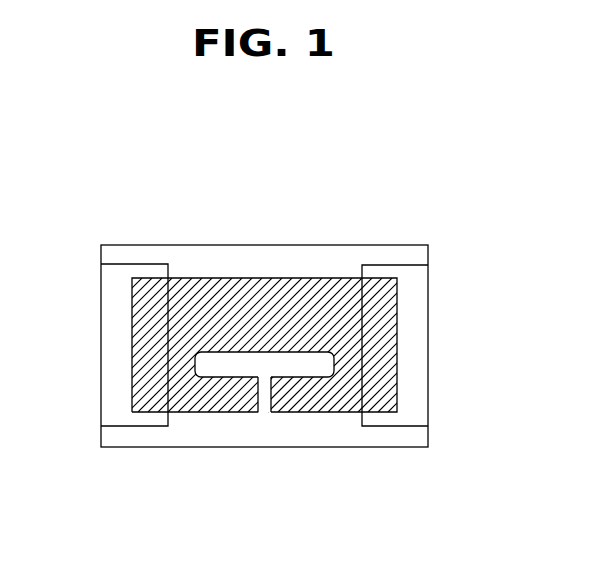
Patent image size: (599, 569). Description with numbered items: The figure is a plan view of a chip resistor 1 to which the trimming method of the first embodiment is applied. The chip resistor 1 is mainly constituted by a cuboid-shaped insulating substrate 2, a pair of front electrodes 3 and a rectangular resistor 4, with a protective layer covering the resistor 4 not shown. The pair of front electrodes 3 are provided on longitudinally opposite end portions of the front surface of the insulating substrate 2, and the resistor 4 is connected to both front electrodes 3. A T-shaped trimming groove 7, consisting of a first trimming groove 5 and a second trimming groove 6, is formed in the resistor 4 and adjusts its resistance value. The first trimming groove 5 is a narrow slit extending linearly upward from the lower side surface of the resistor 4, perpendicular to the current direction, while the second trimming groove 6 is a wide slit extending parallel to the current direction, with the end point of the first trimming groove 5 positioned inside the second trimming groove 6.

The chip resistor 1 is at (277, 319).
The insulating substrate 2 is at (153, 245).
The front electrodes 3 is at (101, 338).
The resistor 4 is at (326, 278).
The first trimming groove 5 is at (263, 398).
The second trimming groove 6 is at (223, 369).
The trimming groove 7 is at (263, 439).